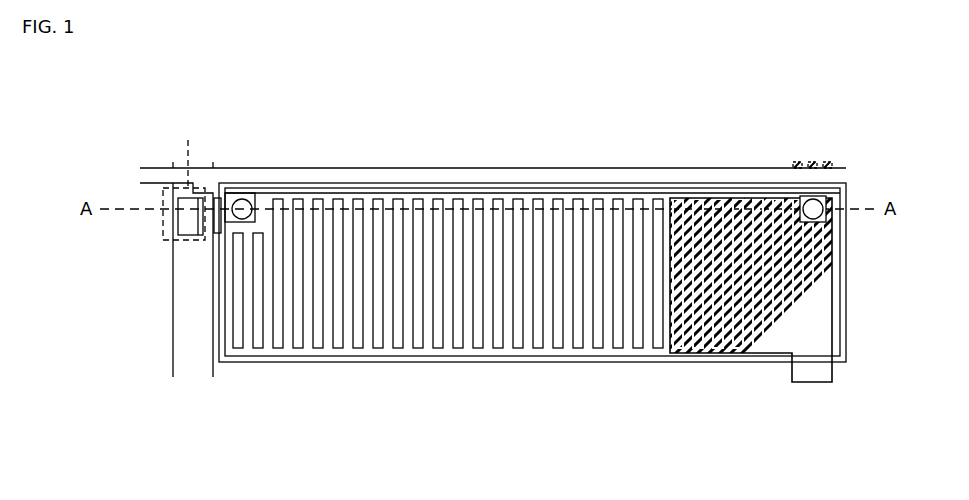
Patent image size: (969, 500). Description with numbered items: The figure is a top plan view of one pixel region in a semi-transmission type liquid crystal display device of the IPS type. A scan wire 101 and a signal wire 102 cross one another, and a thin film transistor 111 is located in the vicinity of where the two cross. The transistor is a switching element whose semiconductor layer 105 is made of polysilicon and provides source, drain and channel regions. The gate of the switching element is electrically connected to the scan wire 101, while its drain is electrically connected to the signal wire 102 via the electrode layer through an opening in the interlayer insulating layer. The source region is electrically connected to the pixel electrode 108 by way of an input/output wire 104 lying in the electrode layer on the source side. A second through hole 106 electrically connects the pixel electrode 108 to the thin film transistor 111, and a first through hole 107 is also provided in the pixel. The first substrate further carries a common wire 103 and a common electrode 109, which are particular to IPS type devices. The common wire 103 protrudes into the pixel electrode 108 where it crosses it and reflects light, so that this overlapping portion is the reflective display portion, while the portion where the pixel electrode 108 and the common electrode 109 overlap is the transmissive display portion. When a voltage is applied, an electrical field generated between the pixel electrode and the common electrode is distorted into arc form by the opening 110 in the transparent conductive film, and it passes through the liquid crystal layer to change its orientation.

The scan wire 101 is at (186, 331).
The signal wire 102 is at (405, 176).
The common wire 103 is at (805, 383).
The input/output wire 104 is at (216, 228).
The semiconductor layer 105 is at (196, 223).
The second through hole 106 is at (245, 206).
The first through hole 107 is at (809, 197).
The pixel electrode 108 is at (366, 347).
The common electrode 109 is at (466, 360).
The opening in transparent conductive film 110 is at (618, 348).
The thin film transistor 111 is at (188, 140).